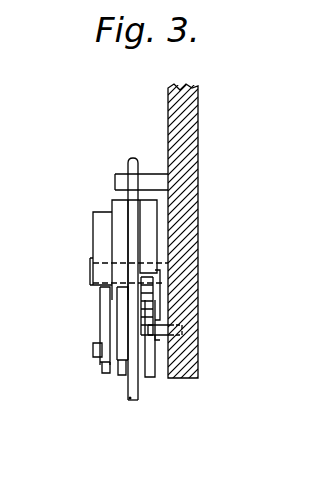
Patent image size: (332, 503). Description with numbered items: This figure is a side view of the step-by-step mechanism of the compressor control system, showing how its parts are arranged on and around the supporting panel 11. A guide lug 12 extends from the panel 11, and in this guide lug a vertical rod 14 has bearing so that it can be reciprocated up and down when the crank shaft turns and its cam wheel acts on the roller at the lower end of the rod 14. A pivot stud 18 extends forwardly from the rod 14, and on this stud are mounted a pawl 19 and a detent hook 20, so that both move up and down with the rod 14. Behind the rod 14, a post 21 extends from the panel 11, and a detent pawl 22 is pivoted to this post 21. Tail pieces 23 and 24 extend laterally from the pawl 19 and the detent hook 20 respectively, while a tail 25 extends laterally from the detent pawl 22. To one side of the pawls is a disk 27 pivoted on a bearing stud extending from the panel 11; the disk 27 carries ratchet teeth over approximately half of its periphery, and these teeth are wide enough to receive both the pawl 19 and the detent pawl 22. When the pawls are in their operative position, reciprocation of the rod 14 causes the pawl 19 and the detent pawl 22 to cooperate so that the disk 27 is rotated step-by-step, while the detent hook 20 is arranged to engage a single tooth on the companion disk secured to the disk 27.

The panel 11 is at (186, 111).
The guide lug 12 is at (144, 181).
The vertical rod 14 is at (126, 162).
The pivot stud 18 is at (102, 358).
The pawl 19 is at (120, 312).
The detent hook 20 is at (103, 295).
The post 21 is at (160, 339).
The detent pawl 22 is at (150, 296).
The tail piece 23 is at (119, 378).
The tail piece 24 is at (105, 374).
The tail 25 is at (150, 378).
The disk 27 is at (145, 225).